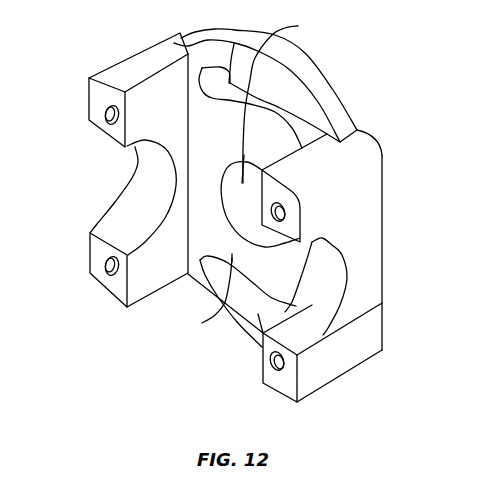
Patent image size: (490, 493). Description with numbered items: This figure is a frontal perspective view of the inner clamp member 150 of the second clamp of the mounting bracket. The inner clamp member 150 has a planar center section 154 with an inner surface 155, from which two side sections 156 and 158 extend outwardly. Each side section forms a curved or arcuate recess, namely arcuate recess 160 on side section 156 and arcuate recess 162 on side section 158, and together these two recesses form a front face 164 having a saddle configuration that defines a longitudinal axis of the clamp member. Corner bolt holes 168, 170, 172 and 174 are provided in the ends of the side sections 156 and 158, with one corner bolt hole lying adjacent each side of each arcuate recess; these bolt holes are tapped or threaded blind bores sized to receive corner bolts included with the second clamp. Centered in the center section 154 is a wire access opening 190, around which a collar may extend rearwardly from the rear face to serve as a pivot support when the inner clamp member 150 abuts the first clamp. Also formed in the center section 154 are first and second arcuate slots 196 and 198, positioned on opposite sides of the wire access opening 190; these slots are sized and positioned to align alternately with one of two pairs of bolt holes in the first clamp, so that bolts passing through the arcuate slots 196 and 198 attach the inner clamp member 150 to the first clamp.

The inner clamp member 150 is at (372, 192).
The planar center section 154 is at (290, 68).
The inner surface 155 is at (200, 322).
The side section 156 is at (336, 366).
The side section 158 is at (88, 255).
The arcuate recess 160 is at (323, 297).
The arcuate recess 162 is at (147, 170).
The front face 164 is at (330, 327).
The corner bolt hole 168 is at (300, 238).
The corner bolt hole 170 is at (277, 372).
The corner bolt hole 172 is at (110, 124).
The corner bolt hole 174 is at (112, 277).
The wire access opening 190 is at (330, 96).
The first arcuate slot 196 is at (262, 34).
The second arcuate slot 198 is at (257, 338).